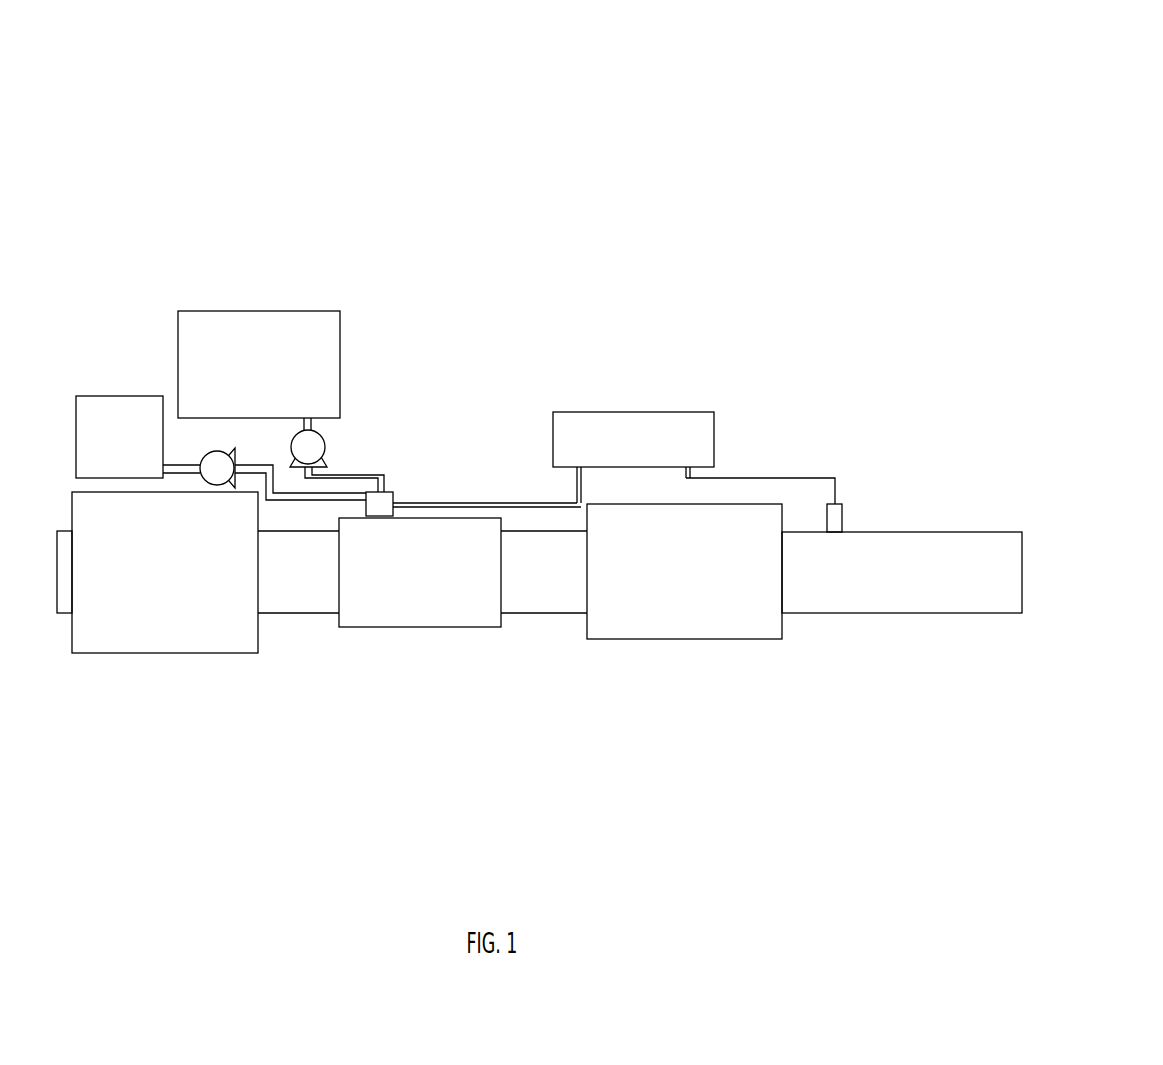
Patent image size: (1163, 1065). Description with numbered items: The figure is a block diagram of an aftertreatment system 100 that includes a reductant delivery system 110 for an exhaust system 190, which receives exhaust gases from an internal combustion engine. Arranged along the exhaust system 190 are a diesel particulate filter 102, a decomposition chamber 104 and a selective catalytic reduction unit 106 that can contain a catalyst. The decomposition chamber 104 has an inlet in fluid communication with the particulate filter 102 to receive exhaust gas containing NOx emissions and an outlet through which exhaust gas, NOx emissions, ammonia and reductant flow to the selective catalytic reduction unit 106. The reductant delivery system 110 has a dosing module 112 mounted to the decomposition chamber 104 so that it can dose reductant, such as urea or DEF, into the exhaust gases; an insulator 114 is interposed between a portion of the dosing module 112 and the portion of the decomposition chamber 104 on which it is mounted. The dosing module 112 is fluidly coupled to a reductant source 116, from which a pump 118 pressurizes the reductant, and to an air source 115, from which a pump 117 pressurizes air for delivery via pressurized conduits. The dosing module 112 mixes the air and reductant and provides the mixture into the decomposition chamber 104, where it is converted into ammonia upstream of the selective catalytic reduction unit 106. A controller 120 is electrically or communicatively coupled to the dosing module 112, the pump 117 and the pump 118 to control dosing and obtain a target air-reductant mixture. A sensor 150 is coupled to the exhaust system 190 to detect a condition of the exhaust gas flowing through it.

The aftertreatment system 100 is at (1052, 93).
The diesel particulate filter 102 is at (178, 653).
The decomposition chamber 104 is at (482, 517).
The selective catalytic reduction unit 106 is at (690, 643).
The exhaust system 190 is at (960, 615).
The controller 120 is at (620, 412).
The sensor 150 is at (860, 512).
The reductant source 116 is at (312, 310).
The air source 115 is at (127, 395).
The reductant delivery system 110 is at (477, 440).
The pump 117 is at (232, 450).
The pump 118 is at (293, 432).
The dosing module 112 is at (395, 498).
The insulator 114 is at (365, 512).